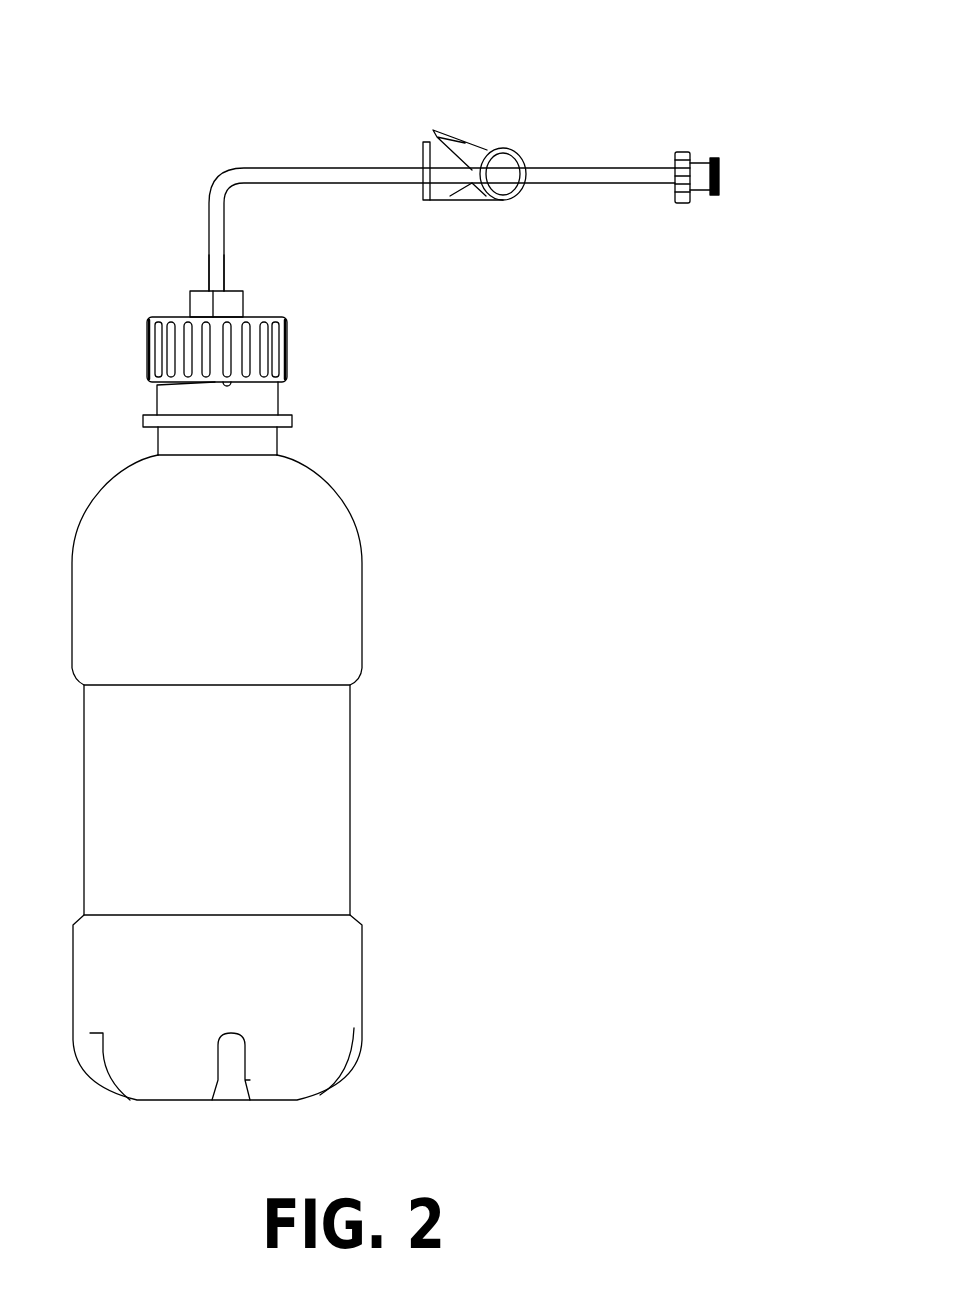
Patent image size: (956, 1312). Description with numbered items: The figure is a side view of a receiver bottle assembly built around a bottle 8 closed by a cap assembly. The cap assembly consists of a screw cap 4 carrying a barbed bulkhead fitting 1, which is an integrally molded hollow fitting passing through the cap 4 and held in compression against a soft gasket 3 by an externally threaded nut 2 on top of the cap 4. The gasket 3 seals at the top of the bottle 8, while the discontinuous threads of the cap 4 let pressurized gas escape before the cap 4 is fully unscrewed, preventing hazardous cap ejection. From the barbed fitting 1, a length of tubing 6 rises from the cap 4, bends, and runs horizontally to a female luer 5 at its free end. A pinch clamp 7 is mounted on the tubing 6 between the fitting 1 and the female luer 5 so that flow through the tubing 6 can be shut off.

The barbed bulkhead fitting 1 is at (208, 285).
The nut 2 is at (243, 293).
The gasket 3 is at (147, 327).
The cap 4 is at (287, 370).
The female luer 5 is at (700, 160).
The tubing 6 is at (585, 165).
The pinch clamp 7 is at (478, 138).
The bottle 8 is at (366, 598).